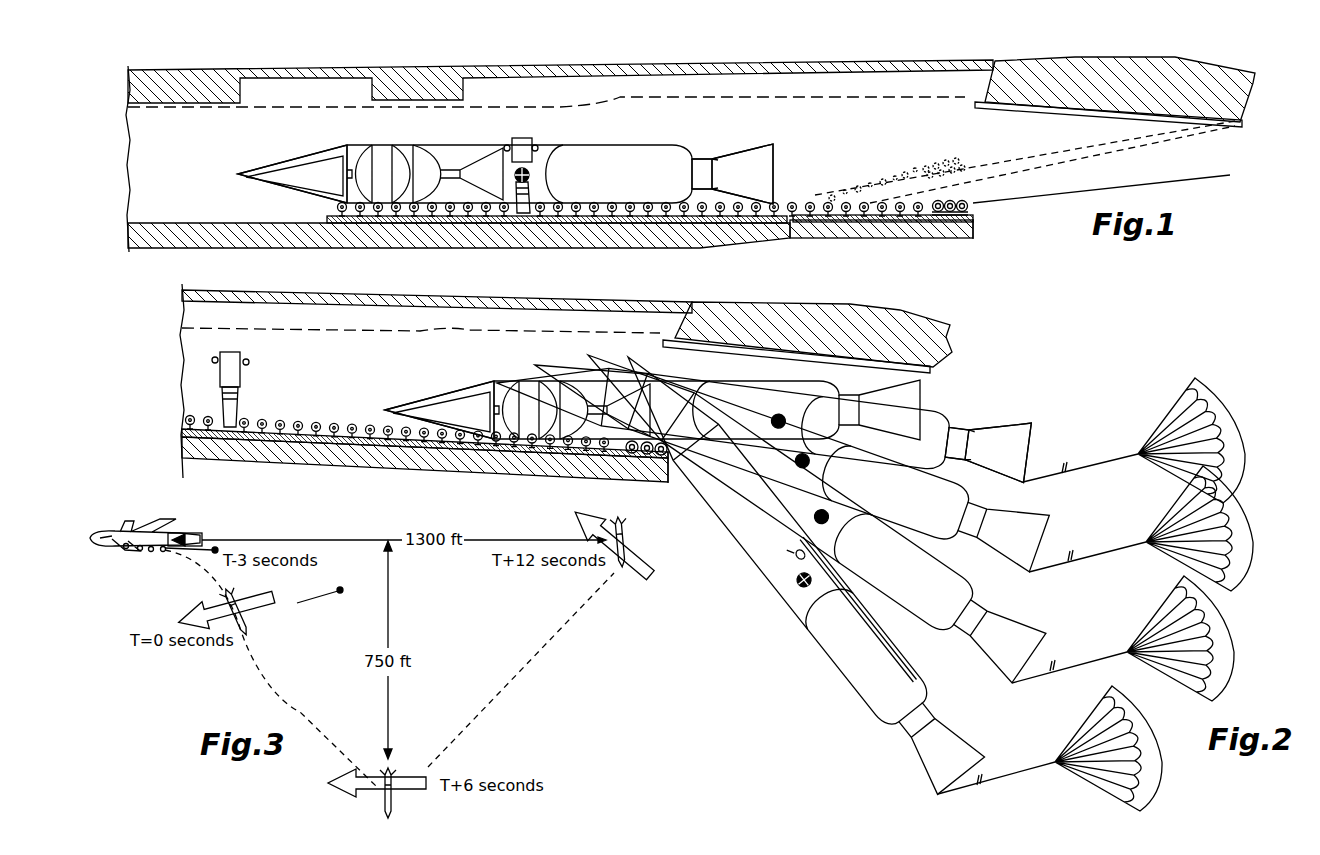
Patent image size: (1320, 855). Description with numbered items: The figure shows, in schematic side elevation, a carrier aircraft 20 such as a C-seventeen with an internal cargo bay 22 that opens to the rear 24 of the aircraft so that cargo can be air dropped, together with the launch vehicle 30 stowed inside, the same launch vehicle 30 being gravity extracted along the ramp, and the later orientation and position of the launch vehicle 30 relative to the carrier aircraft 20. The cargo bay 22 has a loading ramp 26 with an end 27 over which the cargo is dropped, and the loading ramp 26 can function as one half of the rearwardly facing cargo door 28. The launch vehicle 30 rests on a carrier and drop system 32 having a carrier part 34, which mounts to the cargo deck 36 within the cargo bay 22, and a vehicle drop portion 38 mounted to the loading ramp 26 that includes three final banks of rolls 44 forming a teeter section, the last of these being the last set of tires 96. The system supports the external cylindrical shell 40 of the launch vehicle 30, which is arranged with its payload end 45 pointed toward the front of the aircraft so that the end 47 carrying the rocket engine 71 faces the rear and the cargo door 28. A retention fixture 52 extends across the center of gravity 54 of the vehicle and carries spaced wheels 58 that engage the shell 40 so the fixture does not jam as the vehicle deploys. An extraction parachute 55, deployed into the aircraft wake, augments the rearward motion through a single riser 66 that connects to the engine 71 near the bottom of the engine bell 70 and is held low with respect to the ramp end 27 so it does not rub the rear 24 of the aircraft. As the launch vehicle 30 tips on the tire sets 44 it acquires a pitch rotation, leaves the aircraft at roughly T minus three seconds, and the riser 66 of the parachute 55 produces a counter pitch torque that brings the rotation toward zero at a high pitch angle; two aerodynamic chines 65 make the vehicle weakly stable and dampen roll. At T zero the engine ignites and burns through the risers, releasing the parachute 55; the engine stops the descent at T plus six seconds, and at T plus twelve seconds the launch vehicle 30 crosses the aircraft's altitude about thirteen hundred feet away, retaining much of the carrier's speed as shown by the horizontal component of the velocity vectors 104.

In FIG. 1, the carrier aircraft 20 is at (158, 70).
In FIG. 2, the carrier aircraft 20 is at (920, 305).
In FIG. 3, the carrier aircraft 20 is at (142, 525).
In FIG. 1, the internal cargo bay 22 is at (252, 94).
In FIG. 2, the internal cargo bay 22 is at (352, 304).
In FIG. 1, the rear of the aircraft 24 is at (1044, 111).
In FIG. 2, the rear of the aircraft 24 is at (705, 347).
In FIG. 1, the loading ramp 26 is at (838, 238).
In FIG. 2, the loading ramp 26 is at (518, 470).
In FIG. 1, the end of the loading ramp 27 is at (975, 234).
In FIG. 2, the end of the loading ramp 27 is at (668, 484).
In FIG. 1, the cargo door 28 is at (1135, 146).
In FIG. 1, the launch vehicle 30 is at (507, 152).
In FIG. 2, the launch vehicle 30 is at (710, 558).
In FIG. 3, the launch vehicle 30 is at (245, 616).
In FIG. 1, the carrier and drop system 32 is at (340, 212).
In FIG. 2, the carrier and drop system 32 is at (186, 420).
In FIG. 1, the carrier part 34 is at (592, 202).
In FIG. 2, the carrier part 34 is at (310, 427).
In FIG. 1, the cargo deck 36 is at (148, 224).
In FIG. 1, the vehicle drop portion 38 is at (843, 182).
In FIG. 1, the external cylindrical shell 40 is at (446, 145).
In FIG. 2, the external cylindrical shell 40 is at (628, 398).
In FIG. 1, the final banks of rolls 44 is at (975, 204).
In FIG. 1, the payload end 45 is at (236, 175).
In FIG. 2, the payload end 45 is at (383, 412).
In FIG. 1, the engine end of the launch vehicle 47 is at (696, 160).
In FIG. 2, the engine end of the launch vehicle 47 is at (956, 424).
In FIG. 1, the retention fixture 52 is at (520, 137).
In FIG. 2, the retention fixture 52 is at (232, 351).
In FIG. 1, the center of gravity 54 is at (518, 182).
In FIG. 2, the center of gravity 54 is at (803, 586).
In FIG. 2, the extraction parachute 55 is at (1246, 434).
In FIG. 1, the wheels 58 is at (507, 144).
In FIG. 2, the wheels 58 is at (214, 357).
In FIG. 2, the aerodynamic chines 65 is at (912, 666).
In FIG. 1, the parachute riser 66 is at (1210, 174).
In FIG. 2, the parachute riser 66 is at (1112, 459).
In FIG. 1, the engine bell 70 is at (745, 160).
In FIG. 2, the engine bell 70 is at (1005, 420).
In FIG. 1, the rocket engine 71 is at (716, 165).
In FIG. 2, the rocket engine 71 is at (970, 424).
In FIG. 1, the last set of tires 96 is at (968, 214).
In FIG. 2, the last set of tires 96 is at (664, 456).
In FIG. 3, the velocity vectors 104 is at (190, 606).